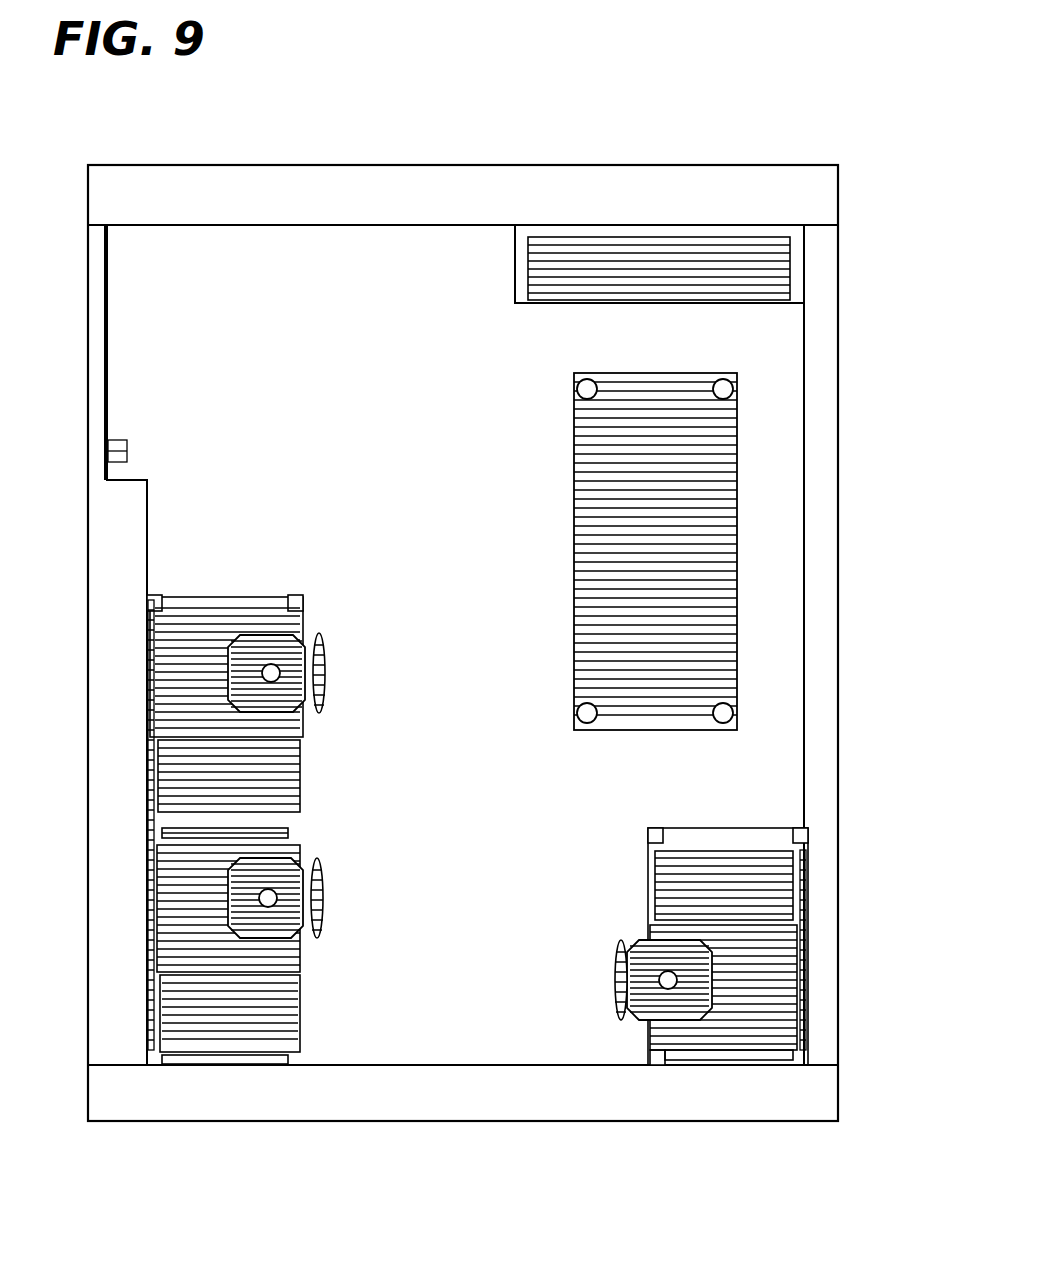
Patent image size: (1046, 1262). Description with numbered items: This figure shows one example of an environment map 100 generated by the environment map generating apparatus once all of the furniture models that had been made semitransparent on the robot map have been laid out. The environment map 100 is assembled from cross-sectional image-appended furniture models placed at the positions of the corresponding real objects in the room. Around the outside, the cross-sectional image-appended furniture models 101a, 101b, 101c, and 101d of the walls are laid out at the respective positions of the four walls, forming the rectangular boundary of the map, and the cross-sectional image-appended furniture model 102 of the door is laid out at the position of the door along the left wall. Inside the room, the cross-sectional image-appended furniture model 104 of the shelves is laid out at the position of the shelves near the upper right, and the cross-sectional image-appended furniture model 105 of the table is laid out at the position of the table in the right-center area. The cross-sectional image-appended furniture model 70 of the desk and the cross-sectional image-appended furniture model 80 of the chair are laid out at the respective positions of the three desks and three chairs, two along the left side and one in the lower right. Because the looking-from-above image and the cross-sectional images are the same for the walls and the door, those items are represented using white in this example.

The environment map 100 is at (654, 134).
The cross-sectional image-appended furniture model of wall 101a is at (433, 175).
The cross-sectional image-appended furniture model of wall 101b is at (827, 595).
The cross-sectional image-appended furniture model of wall 101c is at (700, 1105).
The cross-sectional image-appended furniture model of wall 101d is at (97, 998).
The cross-sectional image-appended furniture model of door 102 is at (87, 333).
The cross-sectional image-appended furniture model of shelves 104 is at (548, 287).
The cross-sectional image-appended furniture model of table 105 is at (770, 553).
The cross-sectional image-appended furniture model of desk 70 is at (222, 600).
The cross-sectional image-appended furniture model of chair 80 is at (328, 667).